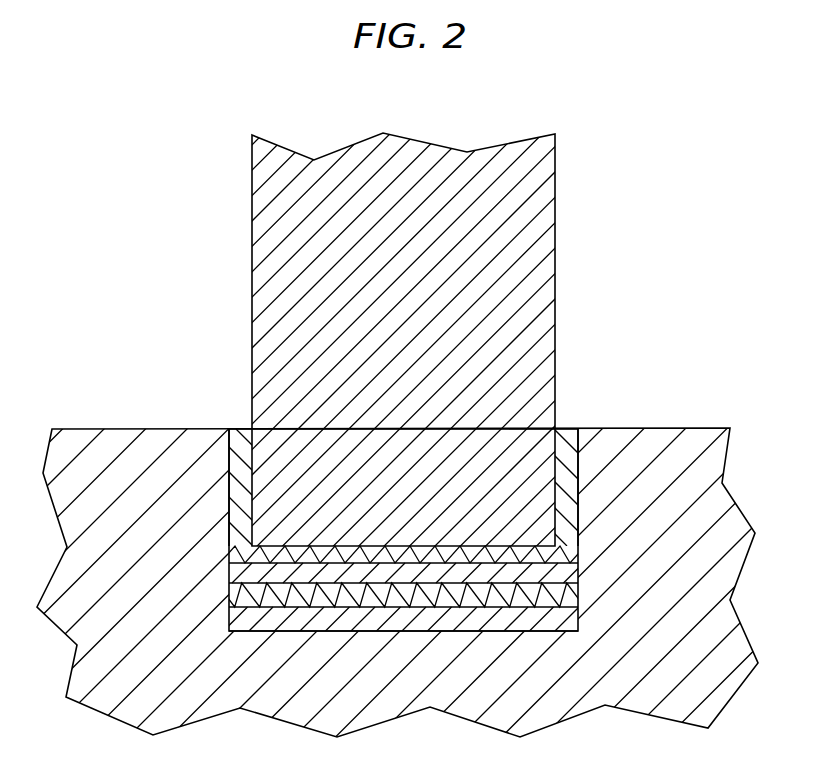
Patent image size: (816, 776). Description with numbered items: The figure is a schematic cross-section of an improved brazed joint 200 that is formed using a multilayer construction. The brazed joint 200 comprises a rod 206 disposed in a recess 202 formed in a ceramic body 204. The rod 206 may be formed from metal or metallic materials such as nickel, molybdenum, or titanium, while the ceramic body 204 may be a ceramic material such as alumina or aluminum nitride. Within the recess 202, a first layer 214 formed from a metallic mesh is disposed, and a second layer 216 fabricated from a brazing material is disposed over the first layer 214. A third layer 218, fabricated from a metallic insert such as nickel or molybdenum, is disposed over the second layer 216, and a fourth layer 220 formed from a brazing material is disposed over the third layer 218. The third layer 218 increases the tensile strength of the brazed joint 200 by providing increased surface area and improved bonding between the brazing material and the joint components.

The brazed joint 200 is at (193, 128).
The recess 202 is at (578, 548).
The ceramic body 204 is at (127, 440).
The rod 206 is at (523, 347).
The first layer 214 is at (565, 617).
The second layer 216 is at (238, 597).
The third layer 218 is at (243, 572).
The fourth layer 220 is at (565, 482).